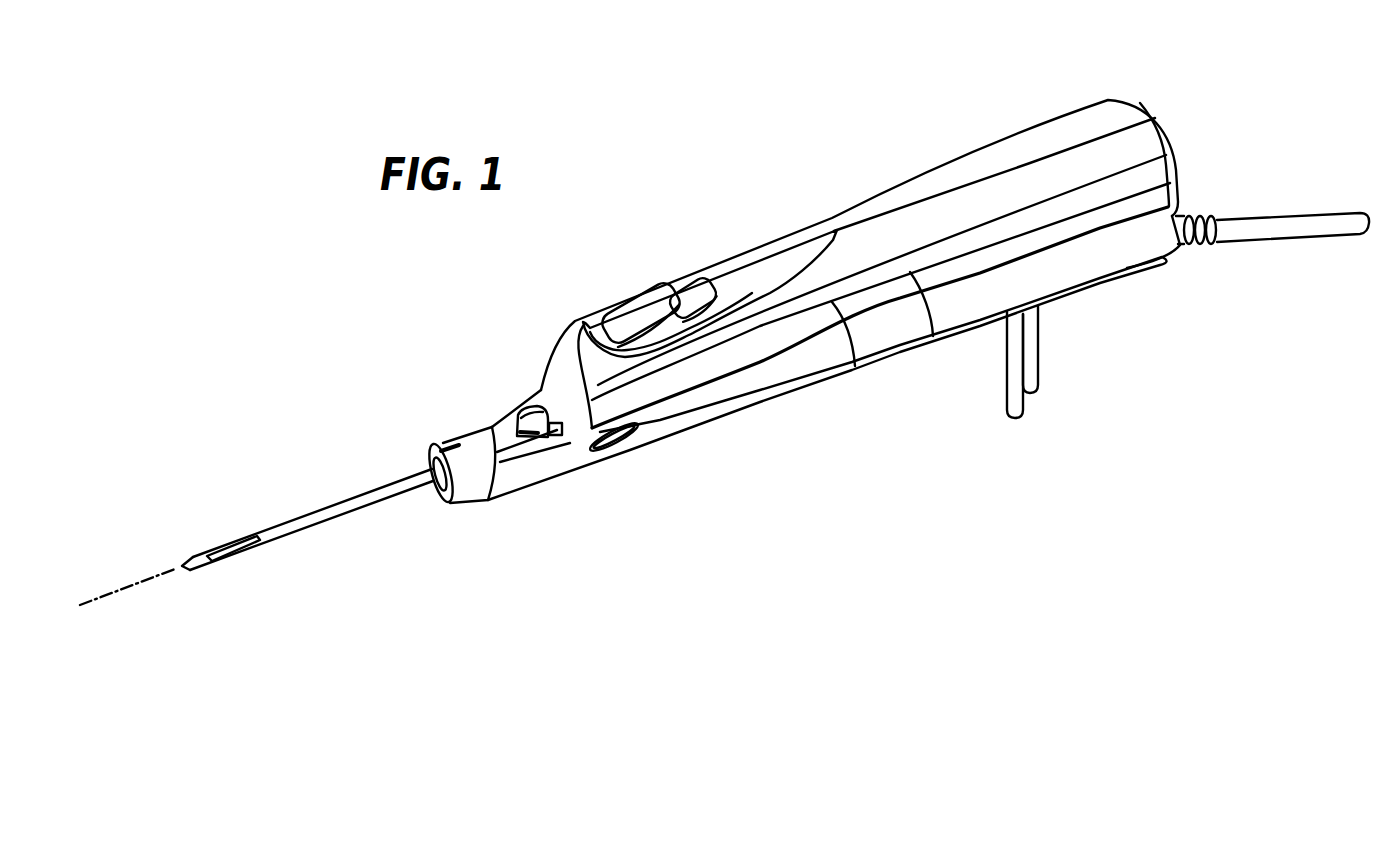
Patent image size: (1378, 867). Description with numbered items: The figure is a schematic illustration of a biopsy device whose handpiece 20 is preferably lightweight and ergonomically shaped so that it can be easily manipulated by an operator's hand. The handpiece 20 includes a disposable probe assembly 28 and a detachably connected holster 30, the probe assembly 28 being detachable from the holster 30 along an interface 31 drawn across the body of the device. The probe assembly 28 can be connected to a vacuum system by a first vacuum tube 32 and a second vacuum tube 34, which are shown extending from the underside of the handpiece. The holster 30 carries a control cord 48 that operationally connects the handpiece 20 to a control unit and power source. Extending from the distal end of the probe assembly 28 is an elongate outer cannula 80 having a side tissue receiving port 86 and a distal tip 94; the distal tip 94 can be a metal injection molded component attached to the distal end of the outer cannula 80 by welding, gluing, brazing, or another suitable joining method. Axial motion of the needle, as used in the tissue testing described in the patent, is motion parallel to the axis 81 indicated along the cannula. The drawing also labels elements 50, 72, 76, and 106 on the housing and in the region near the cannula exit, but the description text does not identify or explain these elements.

The handpiece 20 is at (833, 126).
The probe assembly 28 is at (461, 531).
The holster 30 is at (966, 146).
The interface 31 is at (855, 366).
The first vacuum tube 32 is at (1010, 397).
The second vacuum tube 34 is at (1033, 377).
The control cord 48 is at (1280, 230).
The lower housing 50 is at (680, 408).
The button 72 is at (627, 320).
The button 76 is at (681, 297).
The outer cannula 80 is at (313, 510).
The axis 81 is at (122, 583).
The side tissue receiving port 86 is at (223, 550).
The distal tip 94 is at (183, 573).
The tissue sample holder element 106 is at (553, 420).